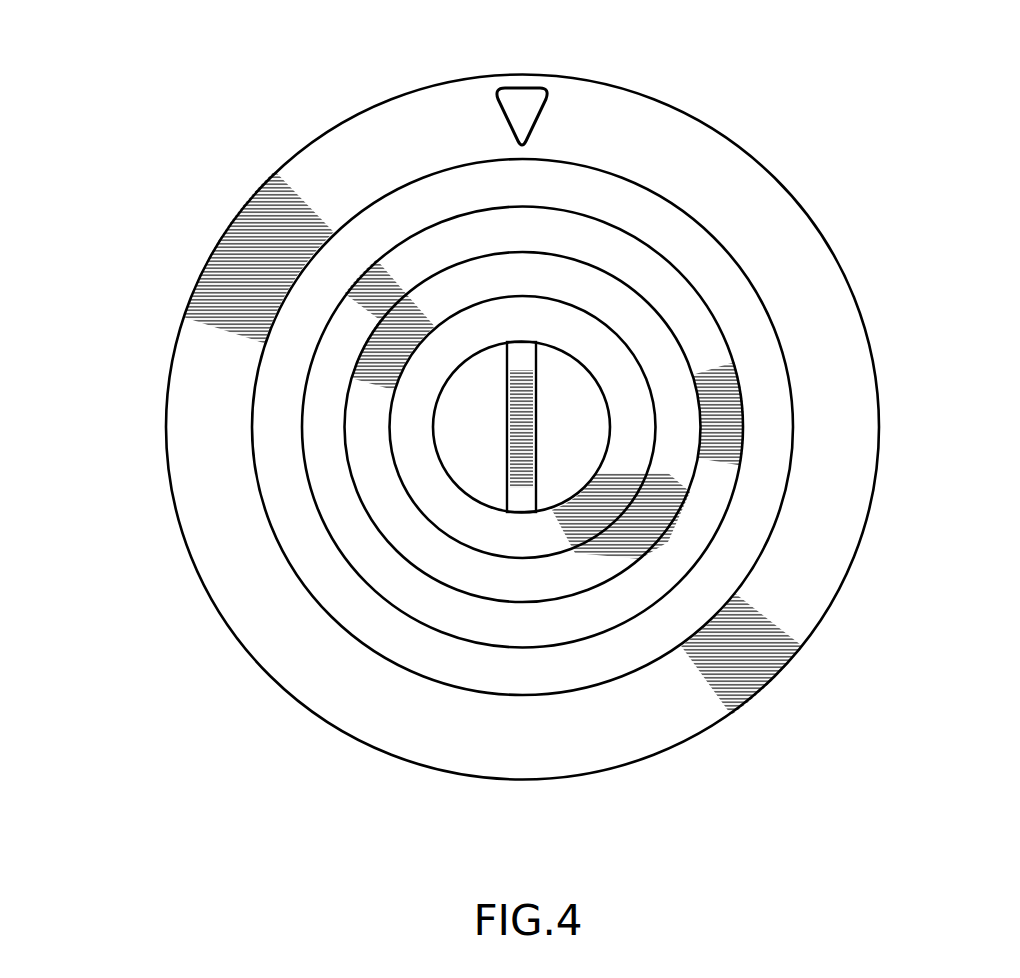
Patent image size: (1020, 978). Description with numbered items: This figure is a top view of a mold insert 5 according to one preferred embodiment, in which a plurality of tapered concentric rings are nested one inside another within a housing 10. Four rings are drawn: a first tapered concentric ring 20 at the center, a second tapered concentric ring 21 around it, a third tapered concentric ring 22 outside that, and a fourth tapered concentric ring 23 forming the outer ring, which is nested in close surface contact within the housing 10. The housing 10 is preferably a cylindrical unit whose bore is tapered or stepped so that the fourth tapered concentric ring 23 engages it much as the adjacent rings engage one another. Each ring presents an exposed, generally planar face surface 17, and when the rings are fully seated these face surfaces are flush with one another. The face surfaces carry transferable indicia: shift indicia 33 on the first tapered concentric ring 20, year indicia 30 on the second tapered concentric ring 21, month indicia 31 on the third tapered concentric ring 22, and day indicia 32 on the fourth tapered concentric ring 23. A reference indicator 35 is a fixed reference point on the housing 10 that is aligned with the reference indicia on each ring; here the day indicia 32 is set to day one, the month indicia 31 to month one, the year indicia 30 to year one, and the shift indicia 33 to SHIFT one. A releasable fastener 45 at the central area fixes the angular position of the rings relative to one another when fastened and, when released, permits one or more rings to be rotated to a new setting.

The mold insert 5 is at (479, 409).
The housing 10 is at (522, 420).
The face surface 17 is at (500, 377).
The first tapered concentric ring 20 is at (423, 498).
The second tapered concentric ring 21 is at (546, 476).
The third tapered concentric ring 22 is at (525, 511).
The fourth tapered concentric ring 23 is at (581, 427).
The year indicia 30 is at (448, 430).
The month indicia 31 is at (439, 430).
The day indicia 32 is at (522, 393).
The shift indicia 33 is at (522, 334).
The reference indicator 35 is at (515, 76).
The releasable fastener 45 is at (421, 347).